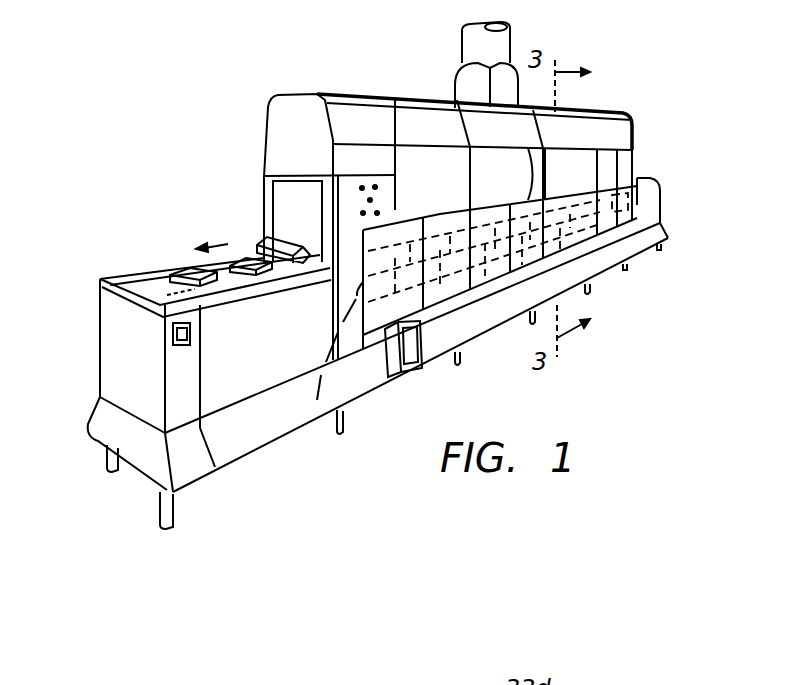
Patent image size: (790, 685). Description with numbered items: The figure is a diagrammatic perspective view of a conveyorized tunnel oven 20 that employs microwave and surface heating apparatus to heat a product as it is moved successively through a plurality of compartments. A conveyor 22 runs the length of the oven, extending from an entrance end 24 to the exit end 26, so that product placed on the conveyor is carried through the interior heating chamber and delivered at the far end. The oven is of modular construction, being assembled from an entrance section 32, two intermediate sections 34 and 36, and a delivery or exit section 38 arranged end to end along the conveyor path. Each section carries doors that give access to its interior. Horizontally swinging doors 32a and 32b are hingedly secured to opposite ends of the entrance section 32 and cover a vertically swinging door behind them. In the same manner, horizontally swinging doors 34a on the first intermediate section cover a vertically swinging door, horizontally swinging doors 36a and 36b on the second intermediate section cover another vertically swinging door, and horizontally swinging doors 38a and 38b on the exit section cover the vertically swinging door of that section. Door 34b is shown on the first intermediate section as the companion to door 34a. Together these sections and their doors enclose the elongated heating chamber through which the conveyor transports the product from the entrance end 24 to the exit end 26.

The conveyorized tunnel oven 20 is at (306, 85).
The conveyor 22 is at (323, 411).
The entrance end 24 is at (692, 152).
The exit end 26 is at (109, 270).
The entrance section 32 is at (612, 113).
The horizontally swinging door 32a is at (635, 238).
The horizontally swinging door 32b is at (613, 230).
The intermediate section 34 is at (560, 126).
The horizontally swinging doors 34a is at (590, 172).
The upper zone of second section 34b is at (630, 136).
The intermediate section 36 is at (462, 60).
The horizontally swinging door 36a is at (517, 170).
The horizontally swinging door 36b is at (513, 129).
The delivery or exit section 38 is at (415, 108).
The horizontally swinging door 38a is at (420, 193).
The horizontally swinging door 38b is at (443, 222).